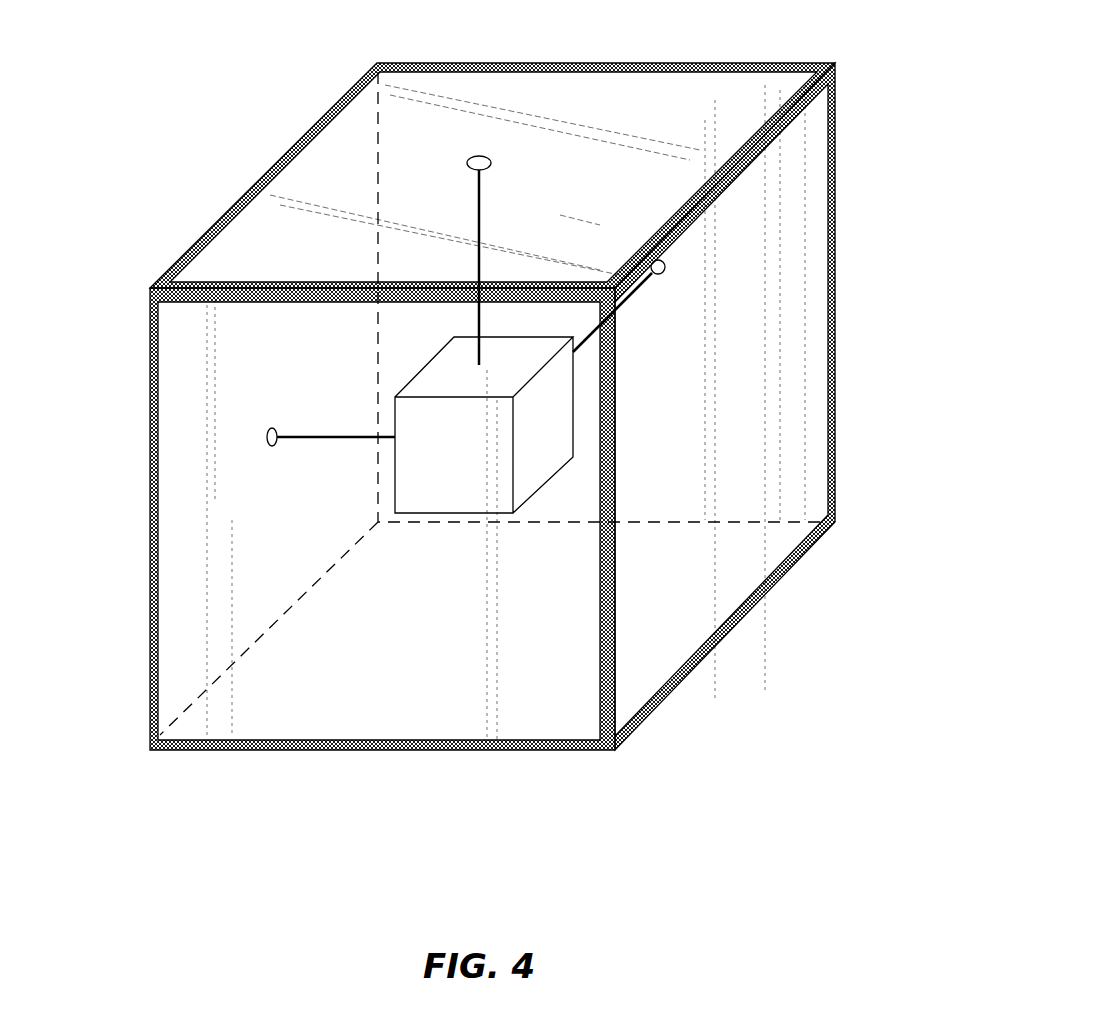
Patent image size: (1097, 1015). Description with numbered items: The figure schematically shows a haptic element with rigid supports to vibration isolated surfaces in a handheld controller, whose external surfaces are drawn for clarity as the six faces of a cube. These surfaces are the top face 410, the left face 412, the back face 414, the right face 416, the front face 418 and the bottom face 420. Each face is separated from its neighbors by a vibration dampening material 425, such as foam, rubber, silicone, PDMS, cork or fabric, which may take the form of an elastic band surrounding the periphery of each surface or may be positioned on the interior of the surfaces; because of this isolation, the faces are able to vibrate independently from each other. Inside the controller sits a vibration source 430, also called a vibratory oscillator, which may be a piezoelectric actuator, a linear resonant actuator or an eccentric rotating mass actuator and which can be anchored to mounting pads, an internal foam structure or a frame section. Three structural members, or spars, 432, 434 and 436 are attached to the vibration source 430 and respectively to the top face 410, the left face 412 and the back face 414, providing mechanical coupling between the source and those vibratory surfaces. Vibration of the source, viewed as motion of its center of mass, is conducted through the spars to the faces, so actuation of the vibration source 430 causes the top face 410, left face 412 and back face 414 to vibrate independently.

The top face 410 is at (628, 105).
The left face 412 is at (330, 233).
The back face 414 is at (737, 232).
The right face 416 is at (780, 372).
The front face 418 is at (350, 572).
The bottom face 420 is at (450, 680).
The vibration dampening material 425 is at (732, 625).
The vibration source 430 is at (480, 515).
The structural member 432 is at (632, 298).
The structural member 434 is at (482, 212).
The structural member 436 is at (358, 438).